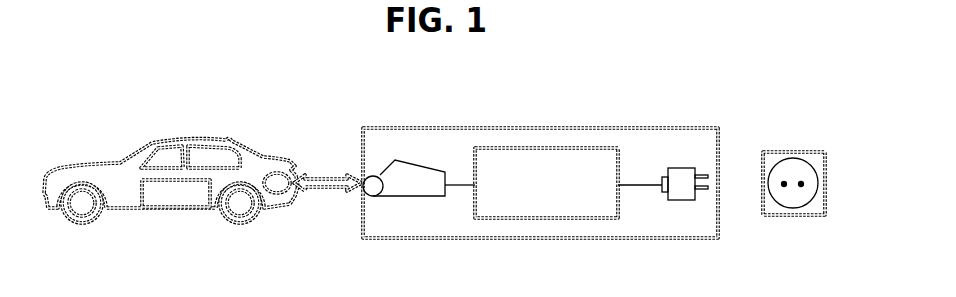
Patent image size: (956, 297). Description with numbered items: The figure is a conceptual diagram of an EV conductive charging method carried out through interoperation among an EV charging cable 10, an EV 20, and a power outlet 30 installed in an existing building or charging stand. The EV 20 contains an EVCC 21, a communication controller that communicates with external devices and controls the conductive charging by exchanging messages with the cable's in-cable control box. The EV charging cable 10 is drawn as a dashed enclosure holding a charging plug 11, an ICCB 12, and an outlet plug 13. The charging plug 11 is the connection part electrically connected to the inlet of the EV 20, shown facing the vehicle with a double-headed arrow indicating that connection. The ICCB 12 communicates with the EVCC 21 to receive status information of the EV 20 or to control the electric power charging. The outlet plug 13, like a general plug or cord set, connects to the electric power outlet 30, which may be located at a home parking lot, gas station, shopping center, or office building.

The EV charging cable 10 is at (535, 127).
The charging plug 11 is at (393, 159).
The ICCB 12 is at (550, 219).
The outlet plug 13 is at (678, 167).
The EV 20 is at (190, 139).
The EVCC 21 is at (182, 209).
The power outlet 30 is at (793, 151).